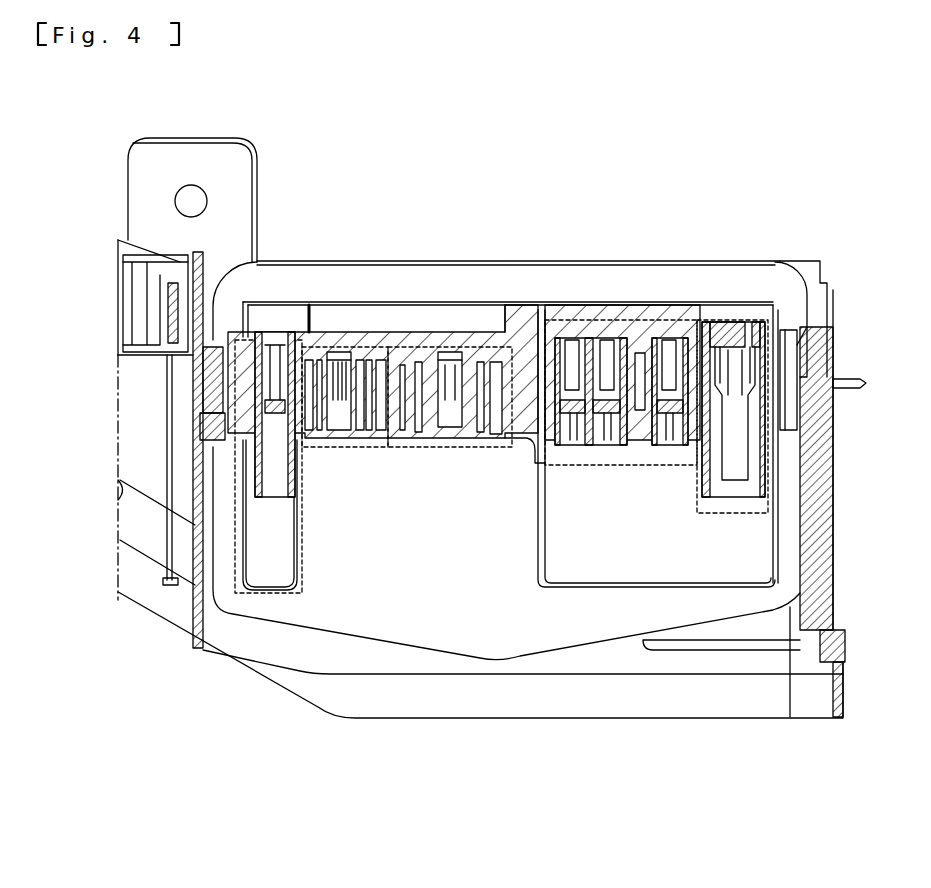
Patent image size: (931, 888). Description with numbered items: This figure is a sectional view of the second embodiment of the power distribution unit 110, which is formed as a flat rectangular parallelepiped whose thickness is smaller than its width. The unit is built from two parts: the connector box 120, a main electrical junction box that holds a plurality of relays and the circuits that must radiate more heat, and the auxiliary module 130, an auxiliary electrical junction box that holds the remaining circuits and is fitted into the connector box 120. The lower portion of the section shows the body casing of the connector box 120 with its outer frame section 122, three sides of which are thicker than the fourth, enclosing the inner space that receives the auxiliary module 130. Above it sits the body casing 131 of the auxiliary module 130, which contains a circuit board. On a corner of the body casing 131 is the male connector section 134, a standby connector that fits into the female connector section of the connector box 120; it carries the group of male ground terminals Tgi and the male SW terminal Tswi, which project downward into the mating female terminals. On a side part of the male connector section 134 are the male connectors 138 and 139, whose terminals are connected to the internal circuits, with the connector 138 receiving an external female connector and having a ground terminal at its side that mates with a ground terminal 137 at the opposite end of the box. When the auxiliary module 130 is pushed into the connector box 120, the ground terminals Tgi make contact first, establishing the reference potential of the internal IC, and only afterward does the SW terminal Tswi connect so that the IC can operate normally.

The power distribution unit 110 is at (637, 160).
The auxiliary module 130 is at (500, 257).
The body casing 131 is at (393, 643).
The connector box 120 is at (745, 718).
The outer frame section 122 is at (600, 697).
The male connector section 134 is at (590, 545).
The terminal accommodating pocket (127) 137 is at (298, 557).
The male connector 138 is at (350, 447).
The male connector 139 is at (448, 447).
The male ground terminal Tgi is at (603, 467).
The male SW terminal Tswi is at (717, 513).